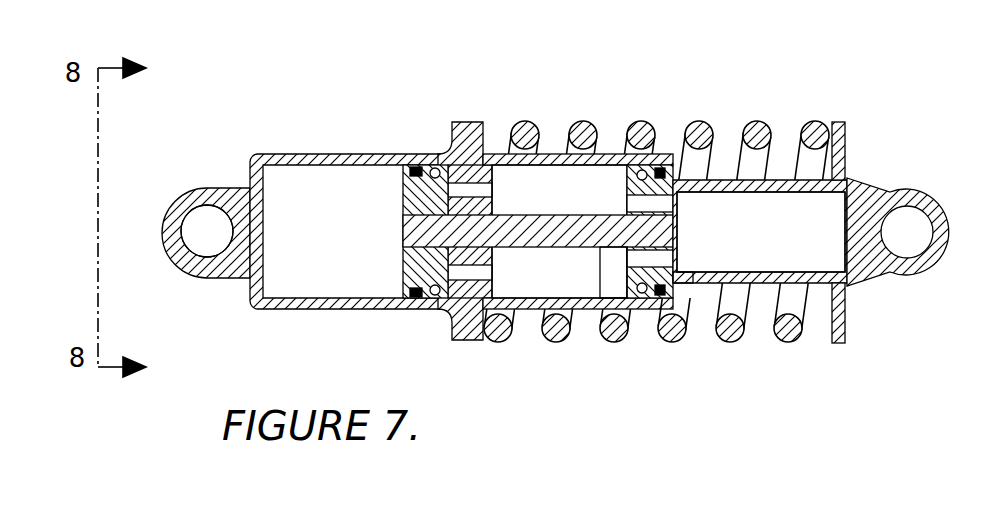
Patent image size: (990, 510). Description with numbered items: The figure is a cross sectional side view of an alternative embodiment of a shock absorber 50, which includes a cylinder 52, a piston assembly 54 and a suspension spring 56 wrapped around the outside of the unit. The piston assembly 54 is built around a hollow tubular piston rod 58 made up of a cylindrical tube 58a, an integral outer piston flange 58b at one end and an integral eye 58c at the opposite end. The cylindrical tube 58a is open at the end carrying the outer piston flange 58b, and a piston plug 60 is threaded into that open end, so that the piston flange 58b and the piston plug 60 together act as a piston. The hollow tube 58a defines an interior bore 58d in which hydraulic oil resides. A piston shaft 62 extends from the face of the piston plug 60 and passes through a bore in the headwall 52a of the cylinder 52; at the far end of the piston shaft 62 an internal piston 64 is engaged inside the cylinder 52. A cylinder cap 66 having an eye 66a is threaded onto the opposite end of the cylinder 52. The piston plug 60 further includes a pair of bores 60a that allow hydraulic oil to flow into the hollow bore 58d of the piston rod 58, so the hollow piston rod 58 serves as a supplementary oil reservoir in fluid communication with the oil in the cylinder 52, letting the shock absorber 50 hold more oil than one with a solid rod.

The shock absorber 50 is at (329, 128).
The cylinder 52 is at (362, 154).
The headwall 52a is at (520, 303).
The piston assembly 54 is at (786, 152).
The suspension spring 56 is at (760, 121).
The hollow tubular piston rod 58 is at (762, 300).
The cylindrical tube 58a is at (713, 284).
The outer piston flange 58b is at (612, 280).
The eye 58c is at (923, 227).
The interior bore 58d is at (777, 242).
The piston plug 60 is at (626, 190).
The bores 60a is at (668, 158).
The piston shaft 62 is at (551, 215).
The internal piston 64 is at (397, 252).
The cylinder cap 66 is at (234, 187).
The eye 66a is at (193, 220).